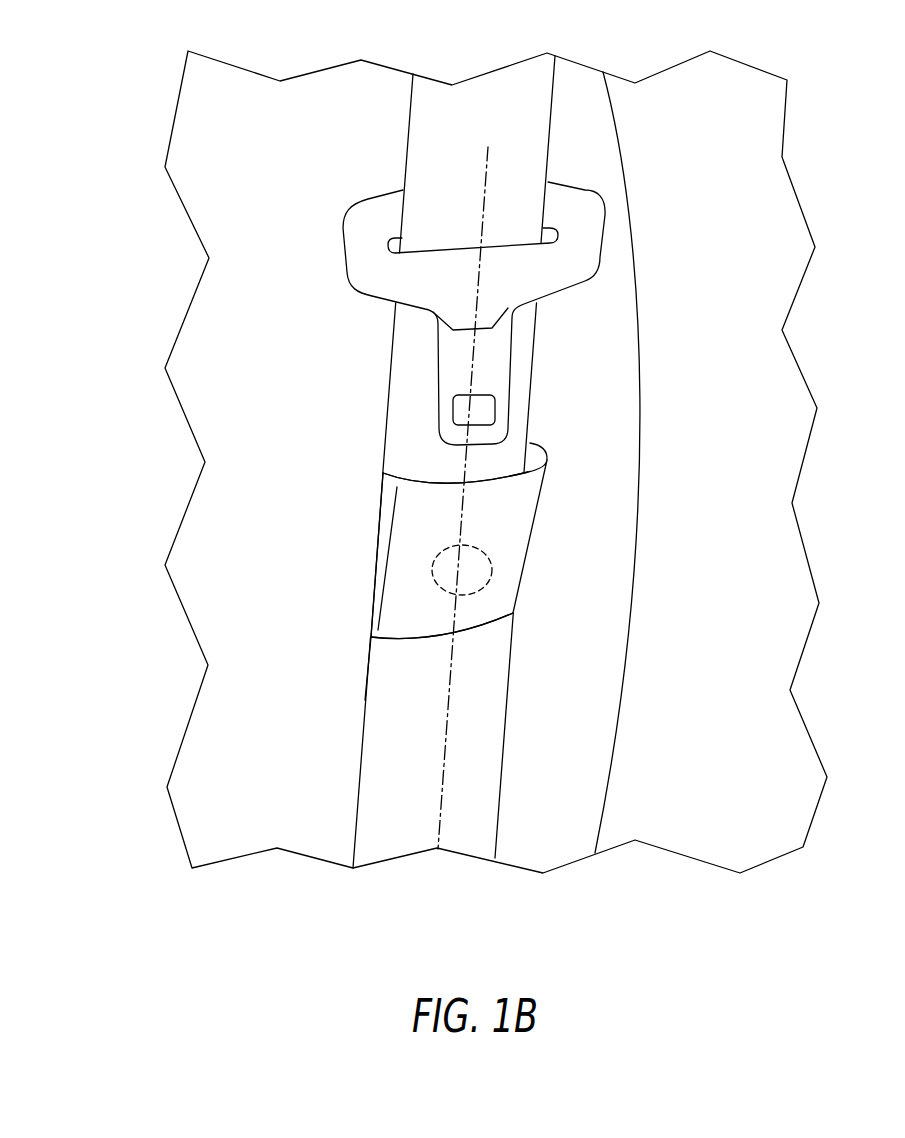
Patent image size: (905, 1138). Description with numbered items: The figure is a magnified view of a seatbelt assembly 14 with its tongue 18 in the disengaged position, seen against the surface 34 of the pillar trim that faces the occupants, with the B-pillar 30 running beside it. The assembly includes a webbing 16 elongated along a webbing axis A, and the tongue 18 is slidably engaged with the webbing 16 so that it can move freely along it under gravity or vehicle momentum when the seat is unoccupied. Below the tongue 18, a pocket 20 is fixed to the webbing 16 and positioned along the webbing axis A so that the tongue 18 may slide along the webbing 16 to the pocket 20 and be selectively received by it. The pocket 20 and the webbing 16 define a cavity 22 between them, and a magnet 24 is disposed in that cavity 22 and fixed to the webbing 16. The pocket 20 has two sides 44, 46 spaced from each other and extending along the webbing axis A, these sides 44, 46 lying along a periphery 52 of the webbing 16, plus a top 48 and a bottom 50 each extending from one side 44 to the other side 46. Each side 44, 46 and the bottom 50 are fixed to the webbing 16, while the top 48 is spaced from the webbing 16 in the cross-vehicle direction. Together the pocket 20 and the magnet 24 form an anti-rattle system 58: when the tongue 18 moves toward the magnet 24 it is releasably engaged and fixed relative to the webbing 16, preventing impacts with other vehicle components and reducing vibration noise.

The seatbelt assembly 14 is at (112, 112).
The webbing 16 is at (351, 789).
The tongue 18 is at (587, 281).
The pocket 20 is at (544, 521).
The cavity 22 is at (416, 466).
The magnet 24 is at (493, 567).
The B-pillar 30 is at (634, 223).
The surface 34 is at (283, 161).
The side 44 is at (381, 544).
The side 46 is at (530, 447).
The top 48 is at (514, 474).
The bottom 50 is at (405, 637).
The periphery 52 is at (363, 738).
The anti-rattle system 58 is at (335, 618).
The webbing axis A is at (470, 482).